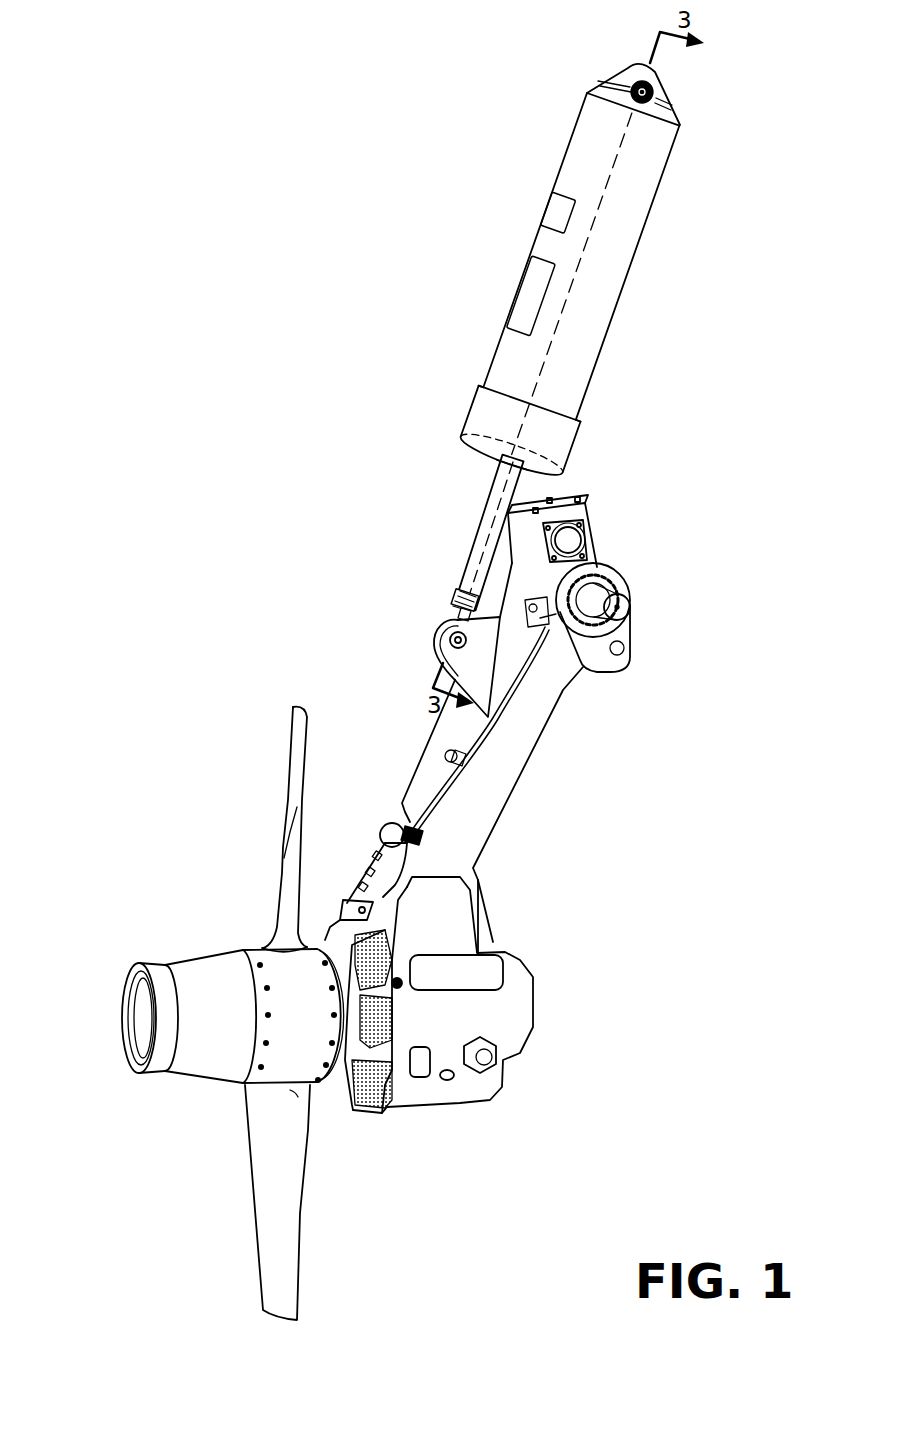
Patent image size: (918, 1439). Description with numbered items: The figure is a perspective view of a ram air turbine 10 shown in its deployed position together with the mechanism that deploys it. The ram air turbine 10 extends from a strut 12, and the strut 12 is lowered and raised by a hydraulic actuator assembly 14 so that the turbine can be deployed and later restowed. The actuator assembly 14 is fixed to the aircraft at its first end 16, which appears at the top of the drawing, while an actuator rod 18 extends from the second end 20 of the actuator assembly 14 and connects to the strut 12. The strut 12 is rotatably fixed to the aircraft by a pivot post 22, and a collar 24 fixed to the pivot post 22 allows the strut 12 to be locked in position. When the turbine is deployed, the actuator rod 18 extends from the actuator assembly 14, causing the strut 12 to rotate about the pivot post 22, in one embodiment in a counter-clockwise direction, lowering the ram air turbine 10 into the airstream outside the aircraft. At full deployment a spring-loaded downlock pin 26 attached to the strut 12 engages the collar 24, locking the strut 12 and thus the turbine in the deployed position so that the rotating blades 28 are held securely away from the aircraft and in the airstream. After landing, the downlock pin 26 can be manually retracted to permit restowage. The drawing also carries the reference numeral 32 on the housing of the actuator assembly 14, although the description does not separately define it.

The ram air turbine 10 is at (230, 884).
The strut 12 is at (510, 810).
The hydraulic actuator assembly 14 is at (455, 288).
The first end 16 is at (655, 75).
The actuator rod 18 is at (478, 539).
The second end 20 is at (503, 454).
The pivot post 22 is at (622, 603).
The collar 24 is at (633, 633).
The downlock pin 26 is at (618, 656).
The rotating blades 28 is at (302, 1210).
The actuator cylinder housing 32 is at (640, 224).